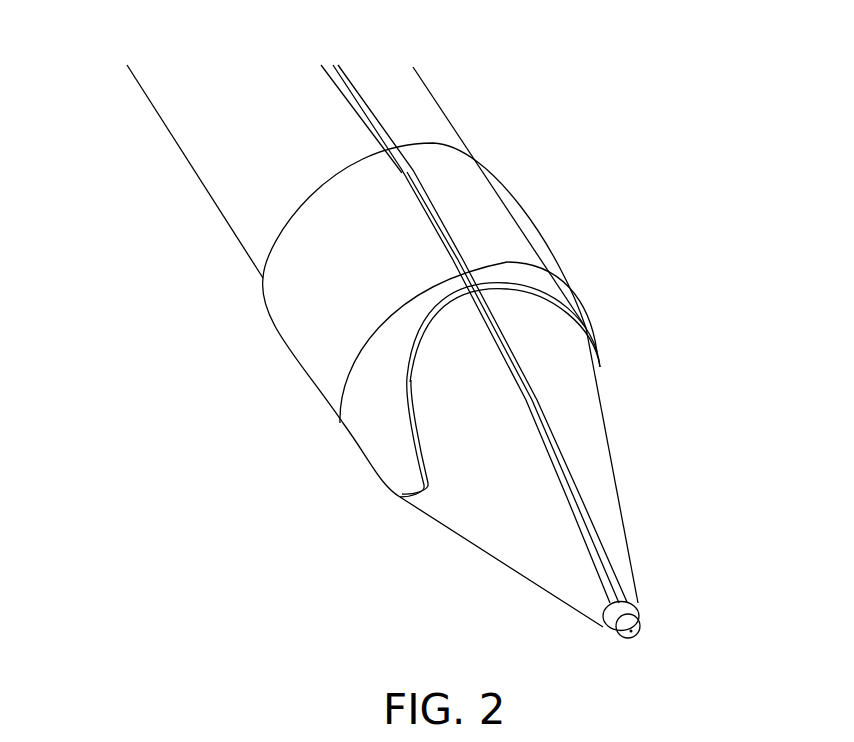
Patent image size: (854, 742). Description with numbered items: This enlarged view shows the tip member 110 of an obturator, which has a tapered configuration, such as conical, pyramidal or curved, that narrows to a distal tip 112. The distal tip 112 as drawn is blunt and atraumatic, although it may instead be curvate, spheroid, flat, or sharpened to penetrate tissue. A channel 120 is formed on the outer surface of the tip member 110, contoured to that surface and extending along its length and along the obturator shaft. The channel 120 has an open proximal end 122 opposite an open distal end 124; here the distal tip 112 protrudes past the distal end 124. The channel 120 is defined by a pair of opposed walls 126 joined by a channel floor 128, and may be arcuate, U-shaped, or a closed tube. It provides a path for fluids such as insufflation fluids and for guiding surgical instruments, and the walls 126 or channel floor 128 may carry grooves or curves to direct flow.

The tip member 110 is at (612, 114).
The distal tip 112 is at (639, 627).
The channel 120 is at (478, 240).
The open proximal end 122 is at (377, 152).
The open distal end 124 is at (607, 627).
The opposed walls 126 is at (417, 205).
The channel floor 128 is at (402, 170).